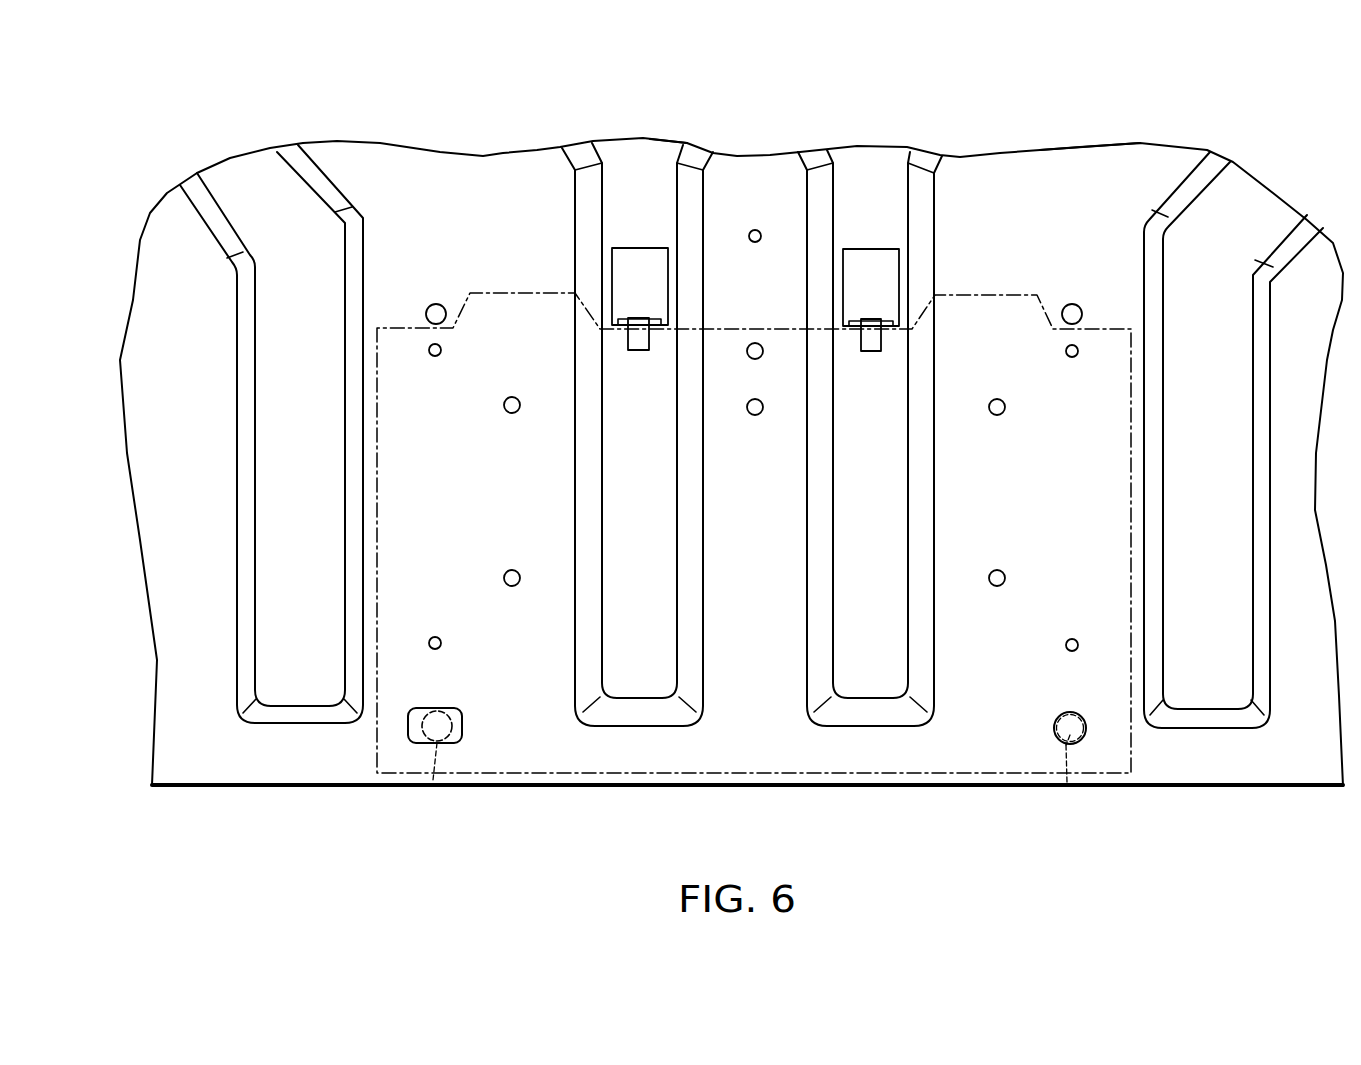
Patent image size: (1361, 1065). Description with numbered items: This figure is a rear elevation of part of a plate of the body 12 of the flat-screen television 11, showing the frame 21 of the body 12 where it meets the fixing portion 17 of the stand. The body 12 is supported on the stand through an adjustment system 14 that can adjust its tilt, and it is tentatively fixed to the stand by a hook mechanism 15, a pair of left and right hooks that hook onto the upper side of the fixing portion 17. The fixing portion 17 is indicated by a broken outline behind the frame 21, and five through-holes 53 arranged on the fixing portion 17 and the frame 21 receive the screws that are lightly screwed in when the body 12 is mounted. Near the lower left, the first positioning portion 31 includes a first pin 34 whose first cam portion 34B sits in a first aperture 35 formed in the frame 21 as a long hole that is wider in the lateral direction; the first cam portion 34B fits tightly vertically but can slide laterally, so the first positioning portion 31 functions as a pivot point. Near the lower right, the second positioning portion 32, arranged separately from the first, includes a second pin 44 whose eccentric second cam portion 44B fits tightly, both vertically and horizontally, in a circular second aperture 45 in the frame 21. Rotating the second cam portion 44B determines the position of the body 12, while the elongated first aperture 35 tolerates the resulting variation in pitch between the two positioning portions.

The flat-screen television 11 is at (765, 104).
The body 12 is at (542, 121).
The adjustment system 14 is at (1150, 766).
The hook mechanism 15 is at (637, 318).
The fixing portion 17 is at (967, 293).
The frame 21 is at (1083, 150).
The first positioning portion 31 is at (451, 730).
The second positioning portion 32 is at (1050, 733).
The first pin 34 is at (459, 725).
The first cam portion 34B is at (433, 780).
The first aperture 35 is at (425, 708).
The second pin 44 is at (1053, 725).
The second cam portion 44B is at (1067, 782).
The second aperture 45 is at (1080, 714).
The through-holes 53 is at (436, 357).